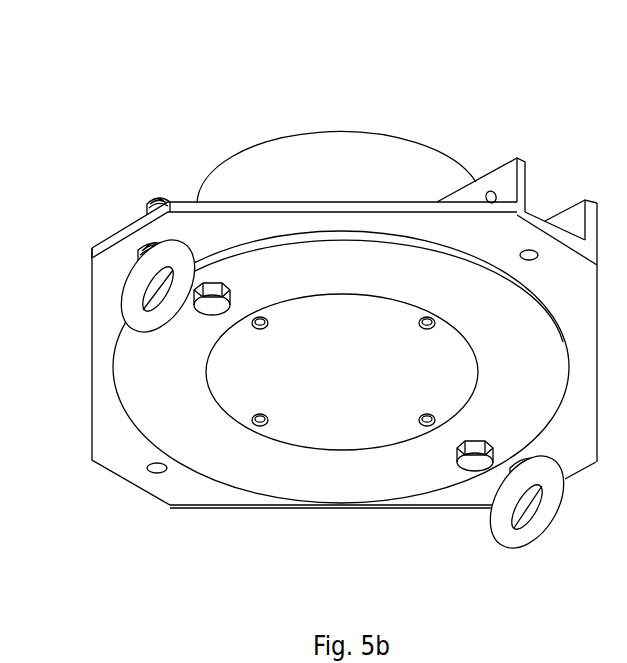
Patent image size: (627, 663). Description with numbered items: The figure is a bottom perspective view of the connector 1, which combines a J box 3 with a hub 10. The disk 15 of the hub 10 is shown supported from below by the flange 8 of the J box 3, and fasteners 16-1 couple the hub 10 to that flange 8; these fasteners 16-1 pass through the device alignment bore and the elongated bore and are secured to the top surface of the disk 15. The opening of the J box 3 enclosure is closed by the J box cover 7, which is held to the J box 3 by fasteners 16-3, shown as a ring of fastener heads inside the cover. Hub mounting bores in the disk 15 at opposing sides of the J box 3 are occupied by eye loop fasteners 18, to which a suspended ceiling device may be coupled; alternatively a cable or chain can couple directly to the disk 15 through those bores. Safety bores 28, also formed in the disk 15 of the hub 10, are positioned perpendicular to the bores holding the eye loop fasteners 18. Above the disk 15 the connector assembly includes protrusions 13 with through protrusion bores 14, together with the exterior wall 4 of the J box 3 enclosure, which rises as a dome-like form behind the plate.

The connector 1 is at (161, 83).
The J box 3 is at (336, 140).
The exterior wall 4 is at (338, 135).
The J box cover 7 is at (338, 330).
The flange 8 is at (348, 483).
The hub 10 is at (344, 388).
The disk 15 is at (210, 490).
The protrusions 13 is at (582, 217).
The through protrusion bores 14 is at (491, 190).
The fasteners 16-1 is at (478, 438).
The fasteners 16-3 is at (254, 422).
The eye loop fasteners 18 is at (128, 304).
The safety bores 28 is at (531, 249).